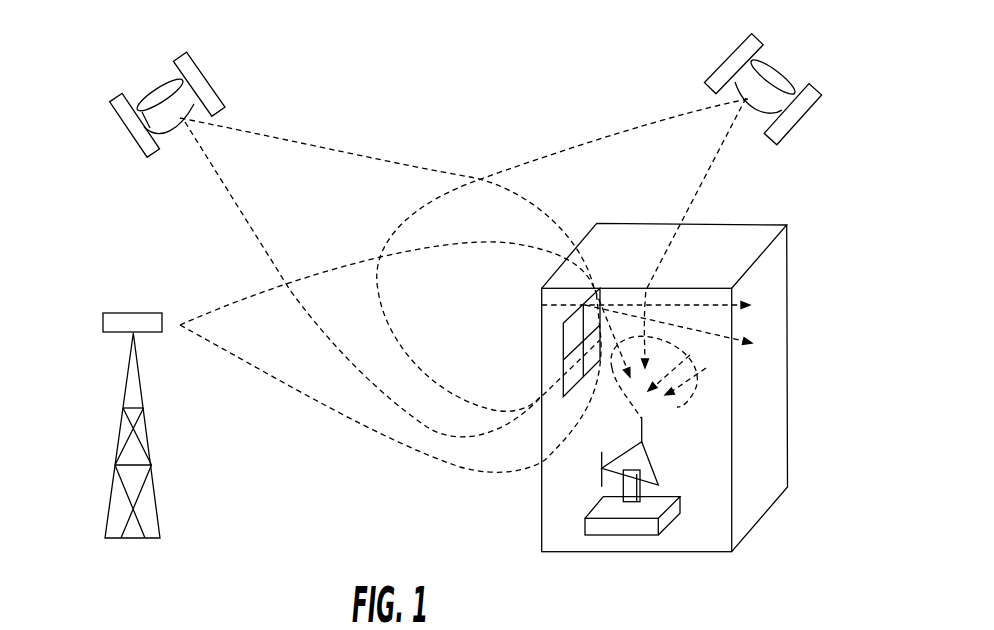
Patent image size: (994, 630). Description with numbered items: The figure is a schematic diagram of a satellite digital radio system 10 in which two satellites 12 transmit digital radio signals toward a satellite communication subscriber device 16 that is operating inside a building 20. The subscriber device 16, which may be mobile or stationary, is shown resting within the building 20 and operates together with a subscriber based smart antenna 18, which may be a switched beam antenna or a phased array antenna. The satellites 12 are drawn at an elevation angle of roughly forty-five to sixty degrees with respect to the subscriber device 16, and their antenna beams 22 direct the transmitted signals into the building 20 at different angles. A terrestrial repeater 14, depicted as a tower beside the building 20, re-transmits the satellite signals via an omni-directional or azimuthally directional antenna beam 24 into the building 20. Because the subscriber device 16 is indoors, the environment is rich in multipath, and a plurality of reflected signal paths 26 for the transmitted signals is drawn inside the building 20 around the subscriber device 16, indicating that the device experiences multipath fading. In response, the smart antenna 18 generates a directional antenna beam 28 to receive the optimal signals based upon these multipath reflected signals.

The satellite digital radio system 10 is at (434, 80).
The satellites 12 is at (117, 123).
The terrestrial repeater 14 is at (128, 372).
The satellite communication subscriber device 16 is at (615, 530).
The smart antenna 18 is at (601, 468).
The building 20 is at (787, 385).
The antenna beams 22 is at (368, 148).
The antenna beam 24 is at (338, 410).
The reflected signal paths 26 is at (685, 296).
The directional antenna beam 28 is at (677, 407).